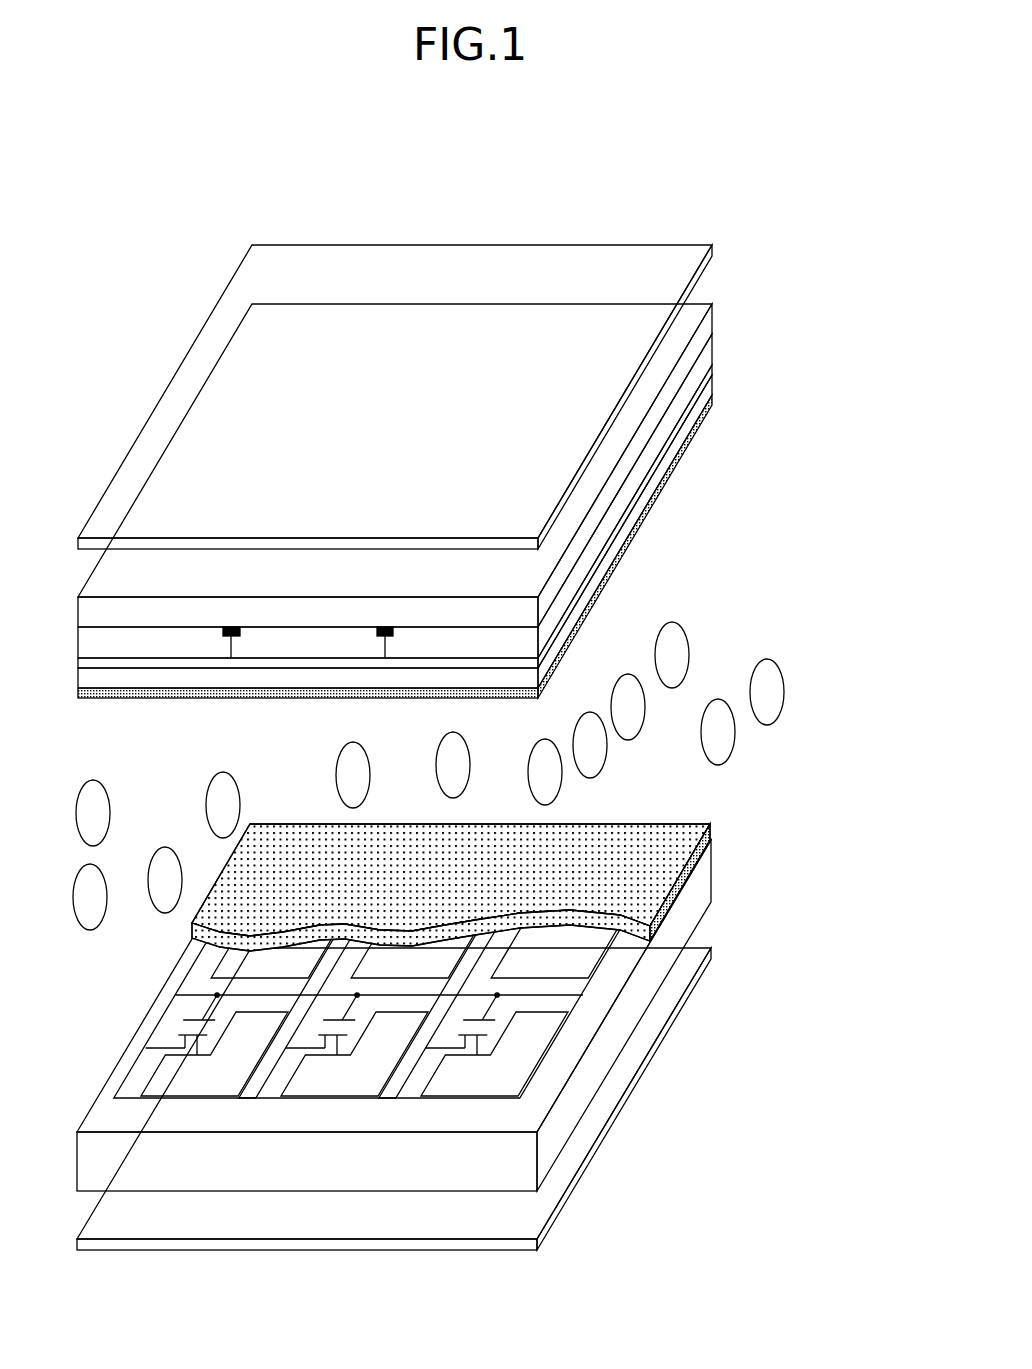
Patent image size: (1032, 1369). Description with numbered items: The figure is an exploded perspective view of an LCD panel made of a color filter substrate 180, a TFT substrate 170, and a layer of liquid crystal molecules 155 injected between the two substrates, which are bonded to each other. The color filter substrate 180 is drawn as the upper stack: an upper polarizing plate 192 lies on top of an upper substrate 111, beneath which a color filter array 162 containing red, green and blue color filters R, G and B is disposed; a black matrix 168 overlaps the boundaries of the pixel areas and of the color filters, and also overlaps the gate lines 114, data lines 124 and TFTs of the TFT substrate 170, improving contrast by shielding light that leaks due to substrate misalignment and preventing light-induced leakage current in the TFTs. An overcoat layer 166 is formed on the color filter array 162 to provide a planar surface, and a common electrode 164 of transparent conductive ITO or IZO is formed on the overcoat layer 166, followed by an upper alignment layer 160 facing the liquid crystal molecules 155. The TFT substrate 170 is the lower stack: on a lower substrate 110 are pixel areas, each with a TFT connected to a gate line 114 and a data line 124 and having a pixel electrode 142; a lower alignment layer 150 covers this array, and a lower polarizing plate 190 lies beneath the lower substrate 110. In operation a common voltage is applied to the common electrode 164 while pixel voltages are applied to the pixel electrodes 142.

The color filter substrate 180 is at (489, 490).
The upper polarizing plate 192 is at (672, 258).
The upper substrate 111 is at (695, 310).
The color filter array 162 is at (710, 338).
The black matrix 168 is at (226, 640).
The overcoat layer 166 is at (710, 372).
The common electrode 164 is at (710, 386).
The upper alignment layer 160 is at (705, 413).
The liquid crystal molecules 155 is at (690, 648).
The TFT substrate 170 is at (443, 1068).
The lower alignment layer 150 is at (705, 838).
The lower substrate 110 is at (705, 878).
The lower polarizing plate 190 is at (705, 965).
The gate line 114 is at (560, 997).
The thin film transistor TFT is at (477, 1050).
The data line 124 is at (404, 1098).
The pixel electrode 142 is at (482, 1088).